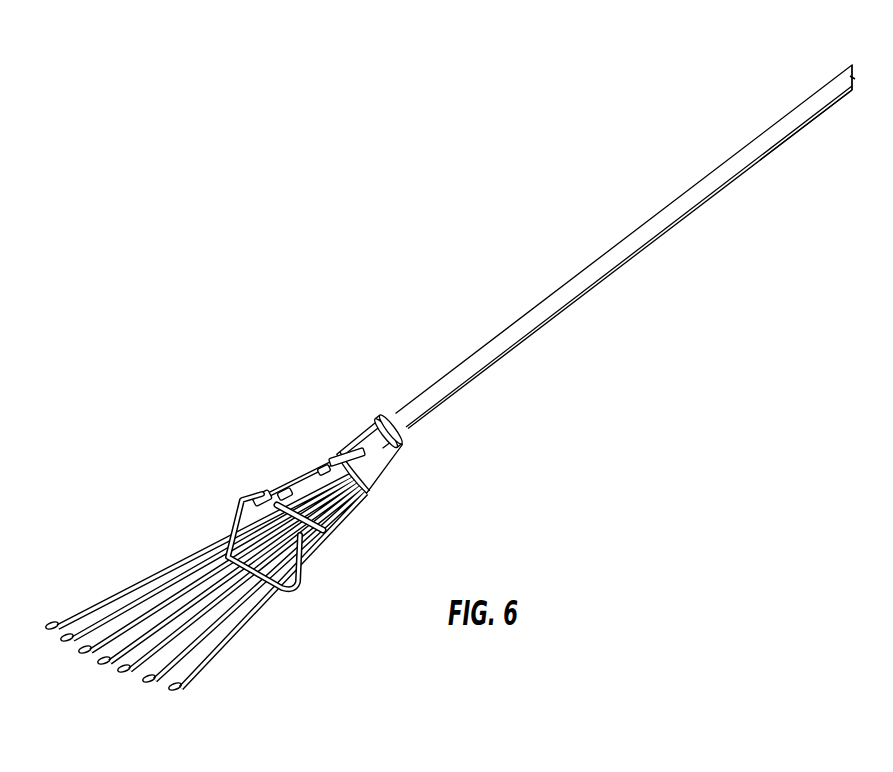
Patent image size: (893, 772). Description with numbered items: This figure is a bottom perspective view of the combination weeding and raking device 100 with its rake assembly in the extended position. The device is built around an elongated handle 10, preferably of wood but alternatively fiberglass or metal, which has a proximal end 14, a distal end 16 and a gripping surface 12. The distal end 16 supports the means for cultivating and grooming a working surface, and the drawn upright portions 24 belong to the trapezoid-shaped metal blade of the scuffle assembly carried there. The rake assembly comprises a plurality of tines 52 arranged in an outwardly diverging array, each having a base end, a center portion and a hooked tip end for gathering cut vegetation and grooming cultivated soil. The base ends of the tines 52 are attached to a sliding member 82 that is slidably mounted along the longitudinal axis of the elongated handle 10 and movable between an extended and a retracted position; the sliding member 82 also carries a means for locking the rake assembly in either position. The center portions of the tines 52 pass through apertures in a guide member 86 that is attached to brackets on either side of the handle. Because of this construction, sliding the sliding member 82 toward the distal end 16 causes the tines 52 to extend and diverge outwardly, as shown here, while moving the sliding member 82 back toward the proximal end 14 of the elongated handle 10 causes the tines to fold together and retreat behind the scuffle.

The combination weeding and raking device 100 is at (425, 121).
The elongated handle 10 is at (537, 302).
The gripping surface 12 is at (790, 139).
The proximal end 14 is at (834, 76).
The sliding member 82 is at (363, 429).
The distal end 16 is at (300, 481).
The upright portions 24 is at (237, 517).
The guide member 86 is at (326, 533).
The tines 52 is at (239, 627).